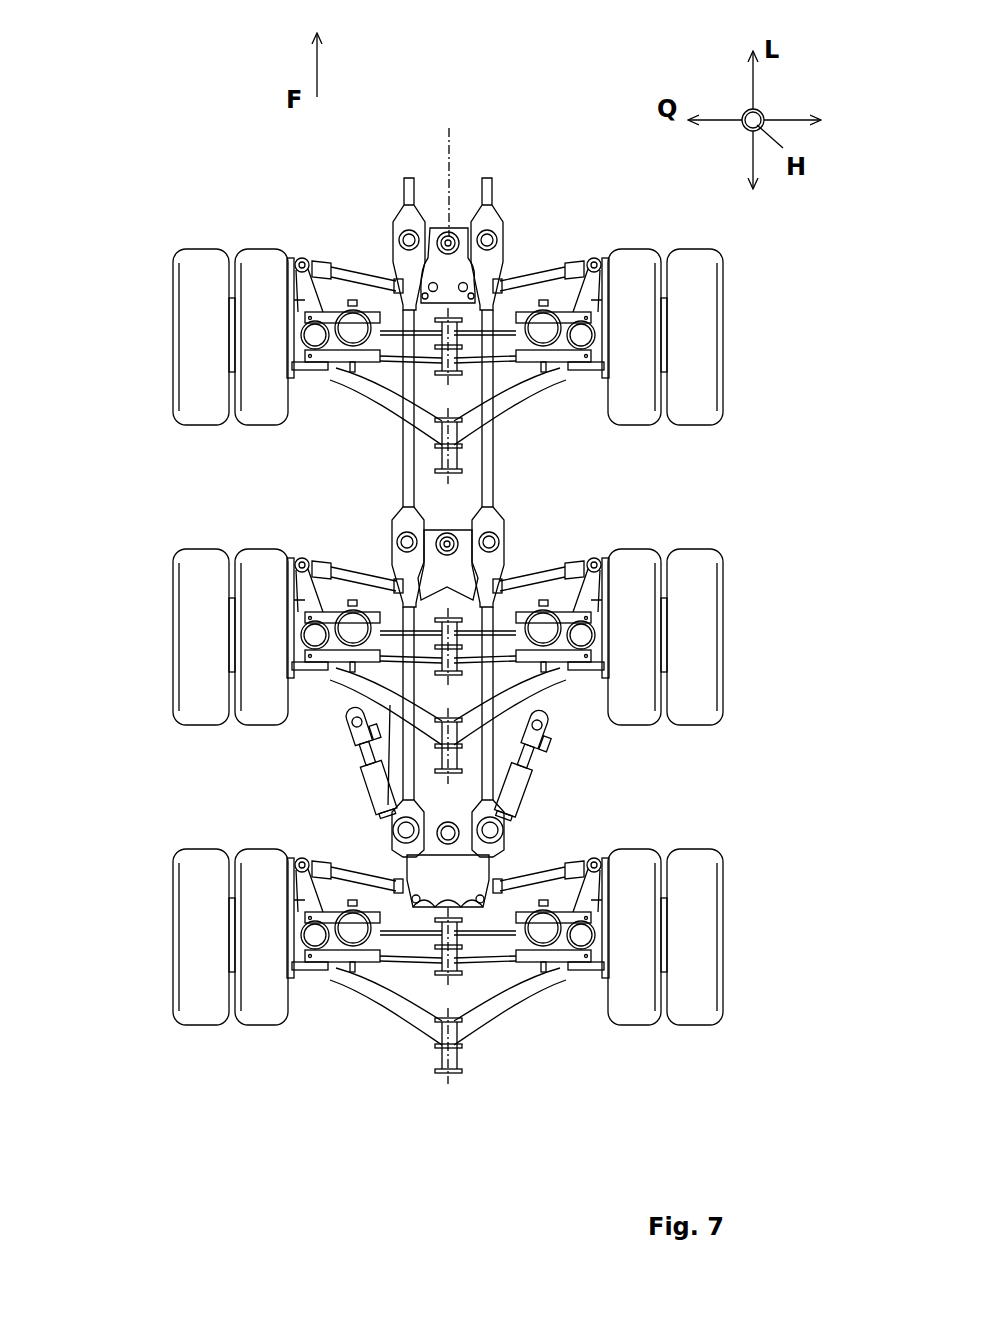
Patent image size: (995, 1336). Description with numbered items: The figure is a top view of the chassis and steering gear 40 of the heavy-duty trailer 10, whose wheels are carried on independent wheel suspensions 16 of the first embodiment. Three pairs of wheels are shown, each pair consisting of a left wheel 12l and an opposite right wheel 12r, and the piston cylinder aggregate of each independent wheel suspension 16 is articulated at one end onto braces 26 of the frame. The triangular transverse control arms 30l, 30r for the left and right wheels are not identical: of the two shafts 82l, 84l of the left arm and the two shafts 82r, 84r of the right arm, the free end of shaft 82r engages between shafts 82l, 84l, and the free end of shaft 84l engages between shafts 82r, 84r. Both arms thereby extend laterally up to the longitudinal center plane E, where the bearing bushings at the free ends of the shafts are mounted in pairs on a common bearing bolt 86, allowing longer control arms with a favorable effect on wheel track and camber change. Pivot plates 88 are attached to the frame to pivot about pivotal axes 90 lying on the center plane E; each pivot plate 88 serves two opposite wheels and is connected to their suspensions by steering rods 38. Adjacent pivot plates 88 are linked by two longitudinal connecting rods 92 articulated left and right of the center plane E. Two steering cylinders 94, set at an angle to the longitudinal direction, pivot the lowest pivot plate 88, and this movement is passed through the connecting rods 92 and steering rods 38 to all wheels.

The heavy-duty trailer 10 is at (222, 163).
The left wheel 12l is at (204, 306).
The right wheel 12r is at (707, 294).
The independent wheel suspension 16 is at (598, 221).
The braces 26 is at (335, 320).
The left triangular transverse control arm 30l is at (387, 405).
The right triangular transverse control arm 30r is at (520, 412).
The steering rod 38 is at (402, 235).
The steering gear 40 is at (218, 772).
The shaft of left transverse control arm 82l is at (397, 333).
The shaft of right transverse control arm 82r is at (502, 350).
The shaft of left transverse control arm 84l is at (377, 383).
The shaft of right transverse control arm 84r is at (522, 407).
The common bearing bolt 86 is at (447, 450).
The pivot plate 88 is at (490, 541).
The pivotal axis 90 is at (406, 543).
The connecting rod 92 is at (486, 480).
The steering cylinder 94 is at (367, 782).
The longitudinal center plane E is at (455, 128).